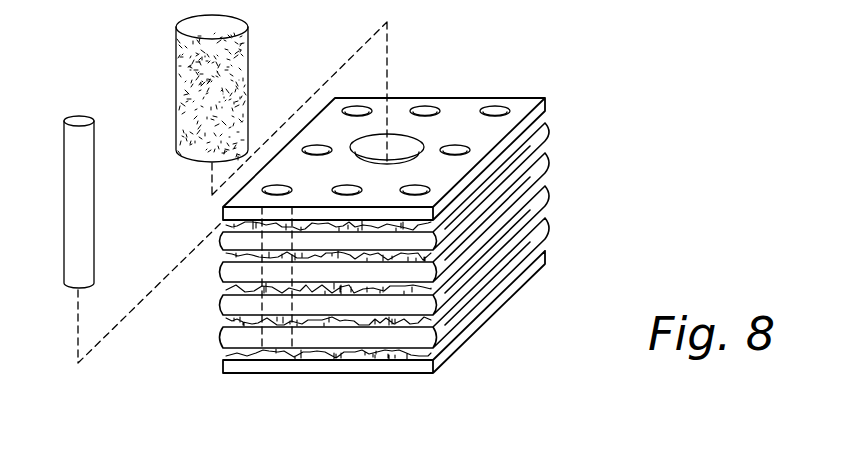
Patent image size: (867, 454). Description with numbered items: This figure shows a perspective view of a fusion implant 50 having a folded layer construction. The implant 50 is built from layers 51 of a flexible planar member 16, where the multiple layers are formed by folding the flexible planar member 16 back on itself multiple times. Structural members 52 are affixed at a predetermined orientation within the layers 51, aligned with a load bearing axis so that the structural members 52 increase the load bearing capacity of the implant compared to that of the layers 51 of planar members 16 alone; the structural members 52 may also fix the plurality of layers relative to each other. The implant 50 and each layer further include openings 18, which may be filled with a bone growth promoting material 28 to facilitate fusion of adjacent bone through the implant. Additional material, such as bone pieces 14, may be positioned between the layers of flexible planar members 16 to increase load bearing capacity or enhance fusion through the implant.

The bone pieces 14 is at (395, 327).
The flexible planar member 16 is at (395, 312).
The openings 18 is at (427, 140).
The bone growth promoting material 28 is at (177, 103).
The implant 50 is at (628, 62).
The layers 51 is at (438, 226).
The structural members 52 is at (70, 213).